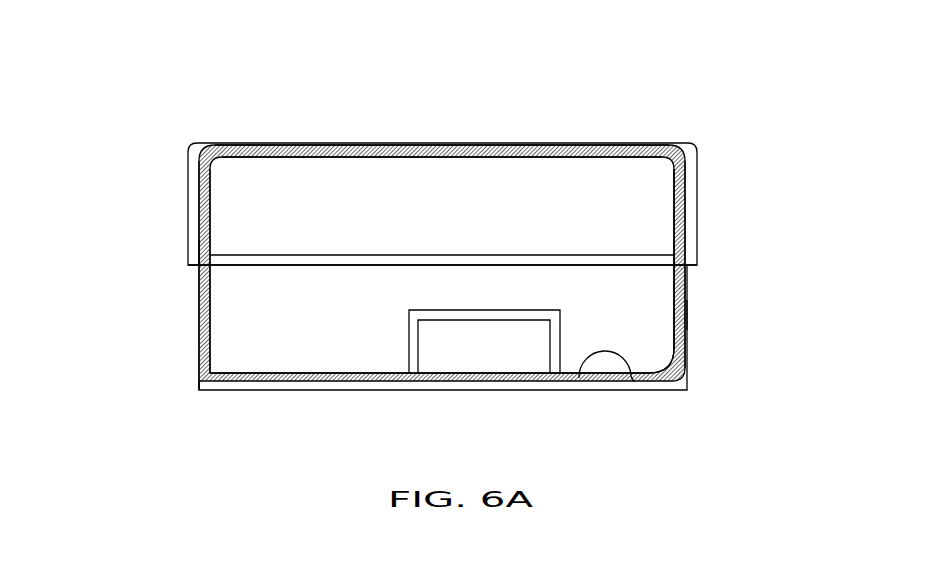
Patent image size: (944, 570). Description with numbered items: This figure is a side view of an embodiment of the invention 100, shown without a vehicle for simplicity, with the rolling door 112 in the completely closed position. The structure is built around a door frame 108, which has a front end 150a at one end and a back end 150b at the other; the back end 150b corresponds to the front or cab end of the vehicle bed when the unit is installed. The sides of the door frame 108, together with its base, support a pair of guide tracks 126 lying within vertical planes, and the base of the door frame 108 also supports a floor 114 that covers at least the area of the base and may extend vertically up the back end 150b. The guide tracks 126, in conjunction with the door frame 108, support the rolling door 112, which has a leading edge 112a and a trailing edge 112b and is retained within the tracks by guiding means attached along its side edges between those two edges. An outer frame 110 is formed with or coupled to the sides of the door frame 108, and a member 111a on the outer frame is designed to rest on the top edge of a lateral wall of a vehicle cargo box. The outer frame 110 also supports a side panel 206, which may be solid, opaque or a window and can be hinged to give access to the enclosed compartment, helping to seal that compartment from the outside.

The invention 100 is at (250, 118).
The outer frame 110 is at (190, 147).
The rolling door 112 is at (418, 145).
The leading edge 112a is at (198, 388).
The trailing edge 112b is at (688, 152).
The side panel 206 is at (508, 185).
The guide track 126 is at (684, 212).
The member 111a is at (292, 268).
The door frame 108 is at (688, 376).
The floor 114 is at (628, 388).
The front end 150a is at (170, 252).
The back end 150b is at (715, 328).